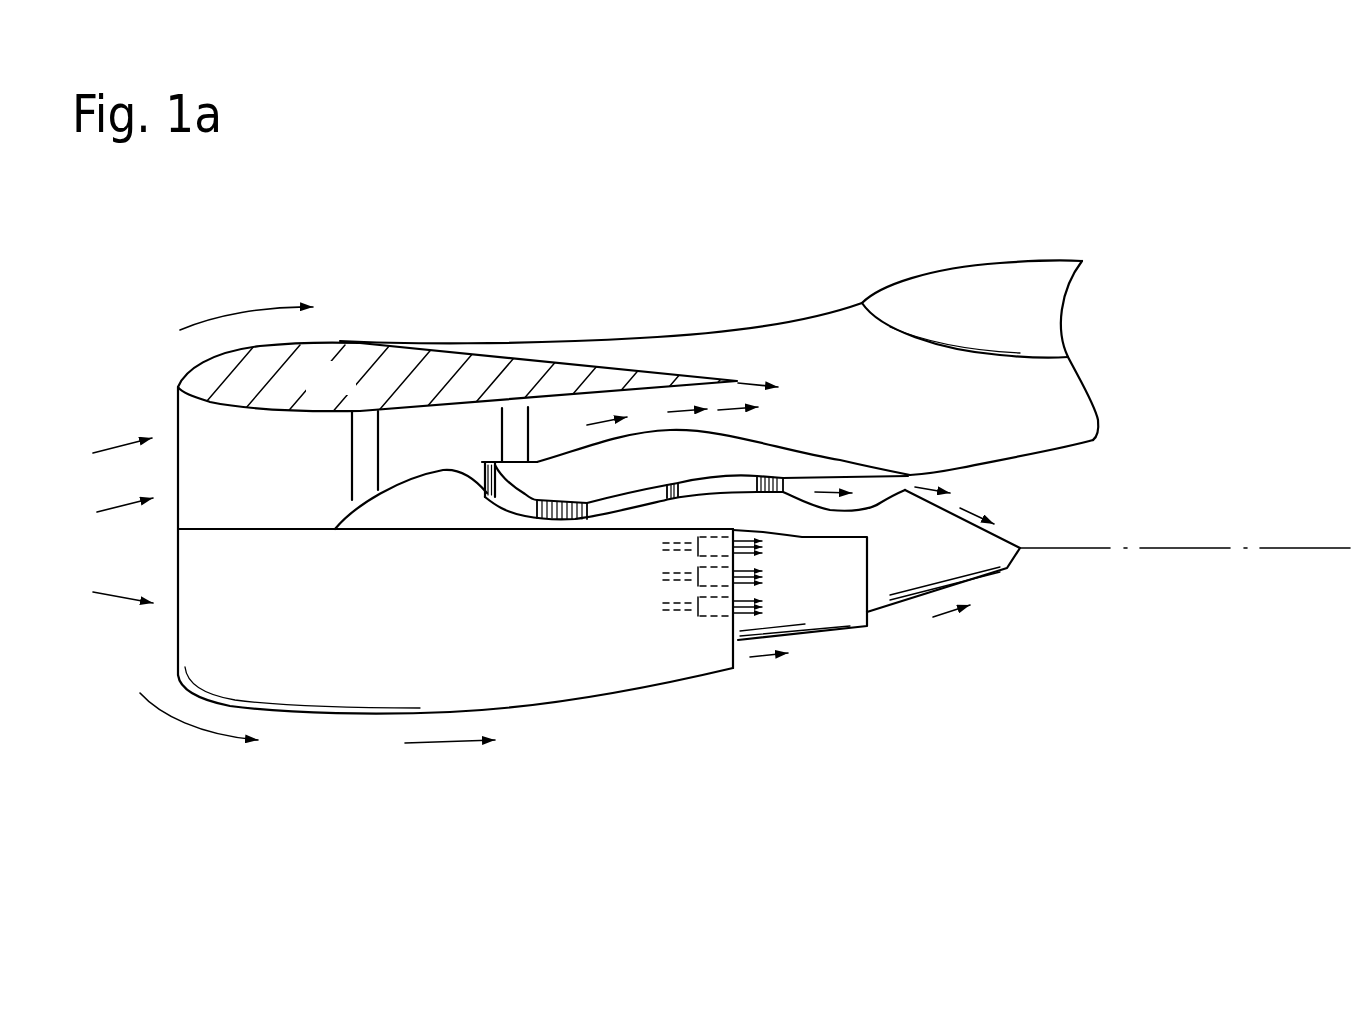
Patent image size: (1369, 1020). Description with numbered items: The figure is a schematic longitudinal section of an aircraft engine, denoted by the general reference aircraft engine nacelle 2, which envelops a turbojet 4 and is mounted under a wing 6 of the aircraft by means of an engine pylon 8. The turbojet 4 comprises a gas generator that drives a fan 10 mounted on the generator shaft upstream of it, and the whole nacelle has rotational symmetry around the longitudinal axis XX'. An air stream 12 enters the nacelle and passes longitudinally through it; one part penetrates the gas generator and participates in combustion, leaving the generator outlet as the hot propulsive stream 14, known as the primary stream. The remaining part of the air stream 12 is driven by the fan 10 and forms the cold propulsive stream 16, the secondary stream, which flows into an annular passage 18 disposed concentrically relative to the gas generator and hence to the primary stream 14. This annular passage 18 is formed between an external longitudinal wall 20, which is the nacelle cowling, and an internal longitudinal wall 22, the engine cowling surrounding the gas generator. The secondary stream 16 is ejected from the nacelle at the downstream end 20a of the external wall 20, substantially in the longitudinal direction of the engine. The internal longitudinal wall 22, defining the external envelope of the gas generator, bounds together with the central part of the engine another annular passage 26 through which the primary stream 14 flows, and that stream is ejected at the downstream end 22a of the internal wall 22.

The aircraft engine nacelle 2 is at (343, 327).
The turbojet 4 is at (587, 450).
The wing 6 is at (1033, 258).
The engine pylon 8 is at (665, 353).
The fan 10 is at (360, 455).
The air stream 12 is at (124, 444).
The hot propulsive stream 14 is at (828, 490).
The cold propulsive stream 16 is at (727, 407).
The annular passage 18 is at (557, 420).
The external longitudinal wall 20 is at (313, 390).
The downstream end of external wall 20a is at (737, 378).
The internal longitudinal wall 22 is at (583, 487).
The downstream end of internal wall 22a is at (867, 623).
The annular passage 26 is at (797, 480).
The longitudinal axis XX' is at (1185, 513).